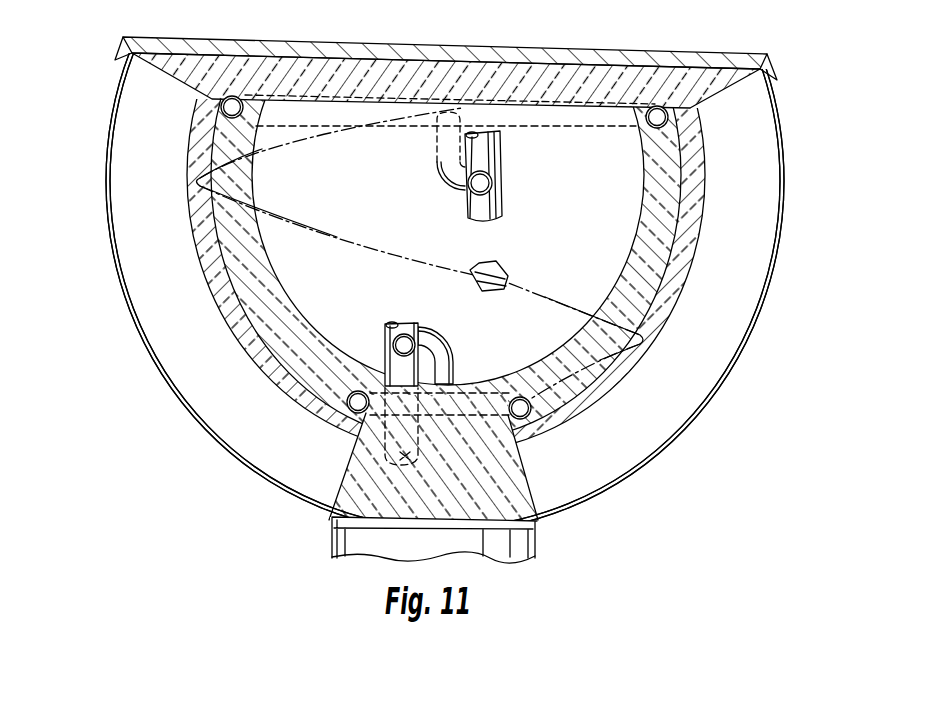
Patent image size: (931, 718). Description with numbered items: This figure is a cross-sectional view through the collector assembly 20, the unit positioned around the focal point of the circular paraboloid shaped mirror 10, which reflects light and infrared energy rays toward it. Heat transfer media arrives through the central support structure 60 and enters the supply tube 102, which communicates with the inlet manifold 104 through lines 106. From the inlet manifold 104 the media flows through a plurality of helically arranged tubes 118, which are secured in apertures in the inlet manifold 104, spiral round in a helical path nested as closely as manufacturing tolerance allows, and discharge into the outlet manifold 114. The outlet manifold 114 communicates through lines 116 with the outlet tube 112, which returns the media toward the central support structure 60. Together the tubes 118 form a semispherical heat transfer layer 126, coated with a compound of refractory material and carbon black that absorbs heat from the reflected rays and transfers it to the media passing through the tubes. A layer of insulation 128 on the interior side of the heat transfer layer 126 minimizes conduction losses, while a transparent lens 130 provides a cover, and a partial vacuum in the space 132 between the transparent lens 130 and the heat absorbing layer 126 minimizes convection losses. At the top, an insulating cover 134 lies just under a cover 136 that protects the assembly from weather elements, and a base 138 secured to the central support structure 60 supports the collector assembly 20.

The circular paraboloid shaped mirror 10 is at (103, 92).
The collector assembly 20 is at (215, 455).
The central support structure 60 is at (467, 530).
The supply tube 102 is at (383, 334).
The inlet manifold 104 is at (358, 392).
The lines 106 is at (440, 353).
The outlet tube 112 is at (502, 198).
The outlet manifold 114 is at (570, 112).
The lines 116 is at (437, 153).
The helically arranged tubes 118 is at (492, 272).
The semispherical heat transfer layer 126 is at (692, 290).
The layer of insulation 128 is at (670, 184).
The transparent lens 130 is at (782, 222).
The space 132 is at (673, 404).
The insulating cover 134 is at (440, 80).
The cover 136 is at (598, 52).
The base 138 is at (355, 483).